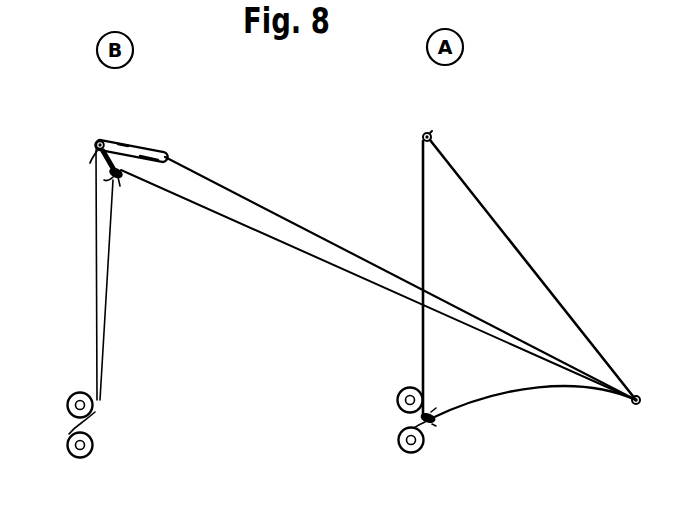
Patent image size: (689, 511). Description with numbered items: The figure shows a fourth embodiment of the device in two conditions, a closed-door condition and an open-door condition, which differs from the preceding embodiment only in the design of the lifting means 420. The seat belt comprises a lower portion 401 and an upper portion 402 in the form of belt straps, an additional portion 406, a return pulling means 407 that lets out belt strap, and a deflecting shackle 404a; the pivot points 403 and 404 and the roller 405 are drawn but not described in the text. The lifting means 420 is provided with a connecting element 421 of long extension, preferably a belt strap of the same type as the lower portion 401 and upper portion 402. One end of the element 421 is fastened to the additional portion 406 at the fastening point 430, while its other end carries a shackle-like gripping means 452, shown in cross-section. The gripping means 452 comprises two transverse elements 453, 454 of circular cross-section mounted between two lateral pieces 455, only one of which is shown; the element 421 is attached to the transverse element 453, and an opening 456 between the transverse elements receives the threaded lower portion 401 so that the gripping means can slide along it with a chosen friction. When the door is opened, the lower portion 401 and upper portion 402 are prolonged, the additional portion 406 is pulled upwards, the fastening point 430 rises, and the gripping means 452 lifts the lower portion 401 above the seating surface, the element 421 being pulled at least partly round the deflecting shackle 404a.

The lower portion 401 is at (120, 252).
The upper portion 402 is at (251, 201).
The pivot point 403 is at (636, 406).
The pivot 404 is at (98, 140).
The deflecting shackle 404a is at (431, 134).
The roller 405 is at (66, 403).
The additional portion 406 is at (94, 237).
The return pulling means 407 is at (68, 447).
The lifting means 420 is at (434, 411).
The connecting element 421 is at (126, 143).
The fastening point 430 is at (152, 153).
The gripping means 452 is at (110, 173).
The transverse element 453 is at (96, 151).
The transverse element 454 is at (119, 182).
The lateral pieces 455 is at (146, 165).
The opening 456 is at (110, 177).